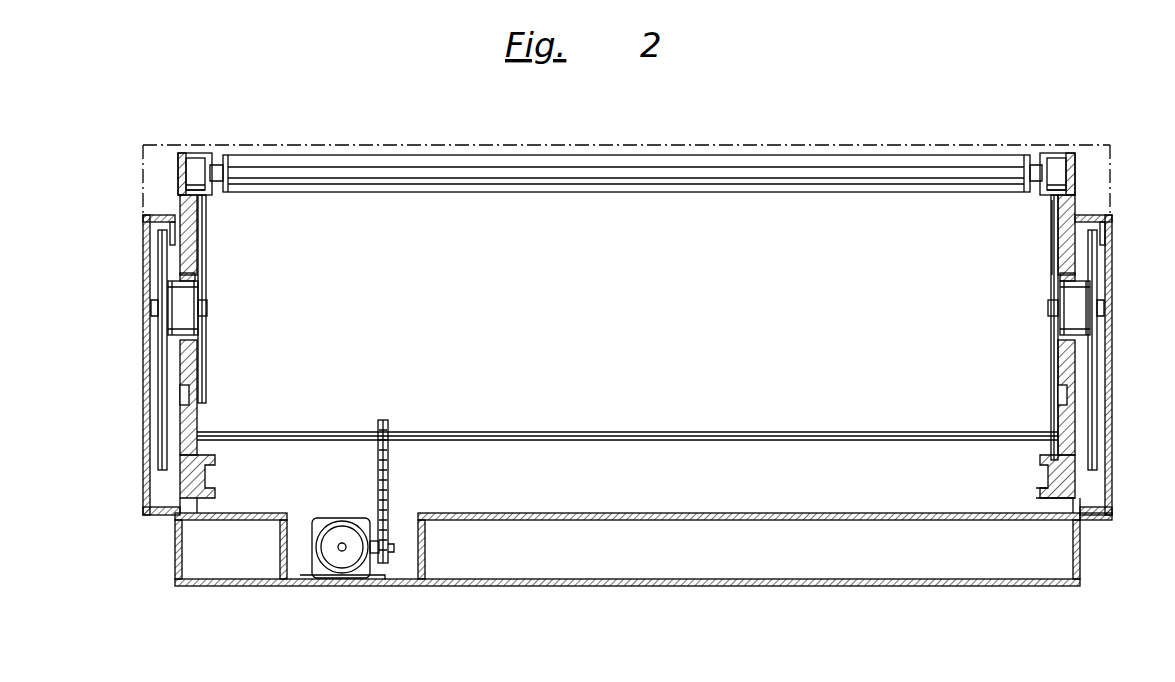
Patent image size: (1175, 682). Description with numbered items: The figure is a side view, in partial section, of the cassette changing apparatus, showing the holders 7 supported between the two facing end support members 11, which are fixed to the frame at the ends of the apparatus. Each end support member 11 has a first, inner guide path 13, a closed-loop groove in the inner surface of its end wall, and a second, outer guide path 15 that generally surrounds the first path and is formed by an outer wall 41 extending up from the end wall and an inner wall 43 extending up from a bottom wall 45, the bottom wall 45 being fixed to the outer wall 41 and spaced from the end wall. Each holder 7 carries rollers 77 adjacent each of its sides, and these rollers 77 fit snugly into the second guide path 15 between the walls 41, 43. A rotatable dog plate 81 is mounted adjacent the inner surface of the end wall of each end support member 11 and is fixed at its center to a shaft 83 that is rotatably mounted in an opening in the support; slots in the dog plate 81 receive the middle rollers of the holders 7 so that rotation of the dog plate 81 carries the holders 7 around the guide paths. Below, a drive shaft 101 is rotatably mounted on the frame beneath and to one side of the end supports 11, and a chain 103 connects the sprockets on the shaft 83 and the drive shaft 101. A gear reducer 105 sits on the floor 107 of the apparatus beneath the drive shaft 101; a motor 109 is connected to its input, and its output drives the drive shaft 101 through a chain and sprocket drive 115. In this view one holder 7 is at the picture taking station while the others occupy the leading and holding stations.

The holder 7 is at (892, 150).
The end support member 11 is at (1052, 225).
The first inner guide path 13 is at (1056, 402).
The second outer guide path 15 is at (223, 484).
The outer wall 41 is at (1063, 498).
The inner wall 43 is at (1040, 459).
The bottom wall 45 is at (1040, 482).
The roller 77 is at (206, 150).
The dog plate 81 is at (205, 250).
The shaft 83 is at (184, 296).
The drive shaft 101 is at (578, 440).
The chain 103 is at (160, 355).
The gear reducer 105 is at (343, 518).
The floor 107 is at (548, 556).
The motor 109 is at (330, 562).
The chain and sprocket drive 115 is at (400, 488).